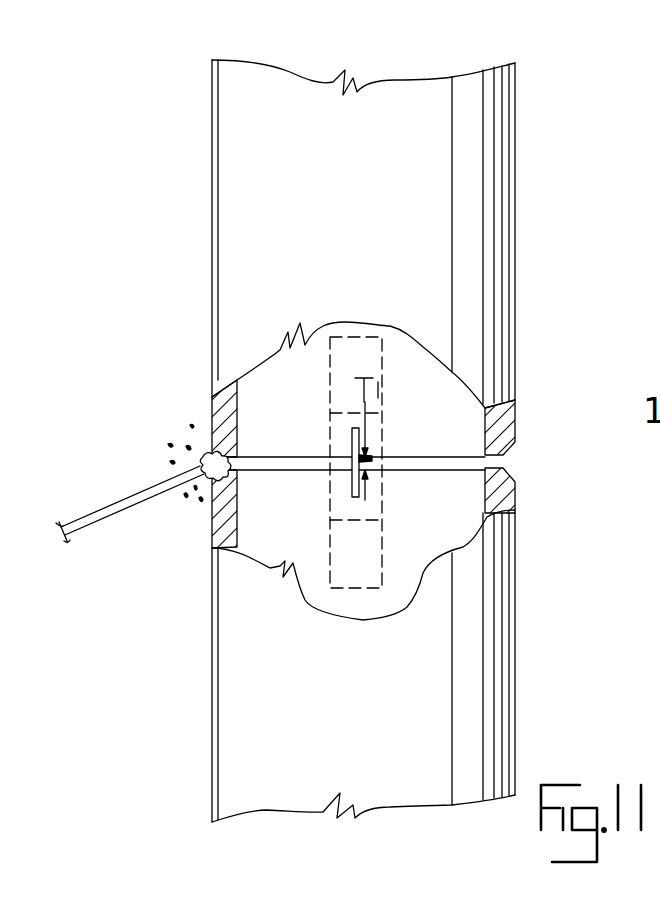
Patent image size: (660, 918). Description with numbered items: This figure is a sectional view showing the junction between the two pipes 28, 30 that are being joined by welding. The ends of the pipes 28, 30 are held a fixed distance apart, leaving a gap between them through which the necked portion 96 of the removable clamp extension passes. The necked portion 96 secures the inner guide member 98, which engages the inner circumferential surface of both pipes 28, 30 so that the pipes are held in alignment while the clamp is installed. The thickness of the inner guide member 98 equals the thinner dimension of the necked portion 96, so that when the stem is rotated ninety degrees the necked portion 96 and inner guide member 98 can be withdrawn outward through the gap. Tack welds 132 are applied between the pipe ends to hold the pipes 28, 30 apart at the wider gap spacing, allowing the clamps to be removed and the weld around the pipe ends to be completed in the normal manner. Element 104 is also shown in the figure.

The pipe 28 is at (385, 108).
The pipe 30 is at (393, 785).
The necked portion 96 is at (388, 457).
The inner guide member 98 is at (352, 456).
The sensor 104 is at (358, 370).
The tack weld 132 is at (207, 447).